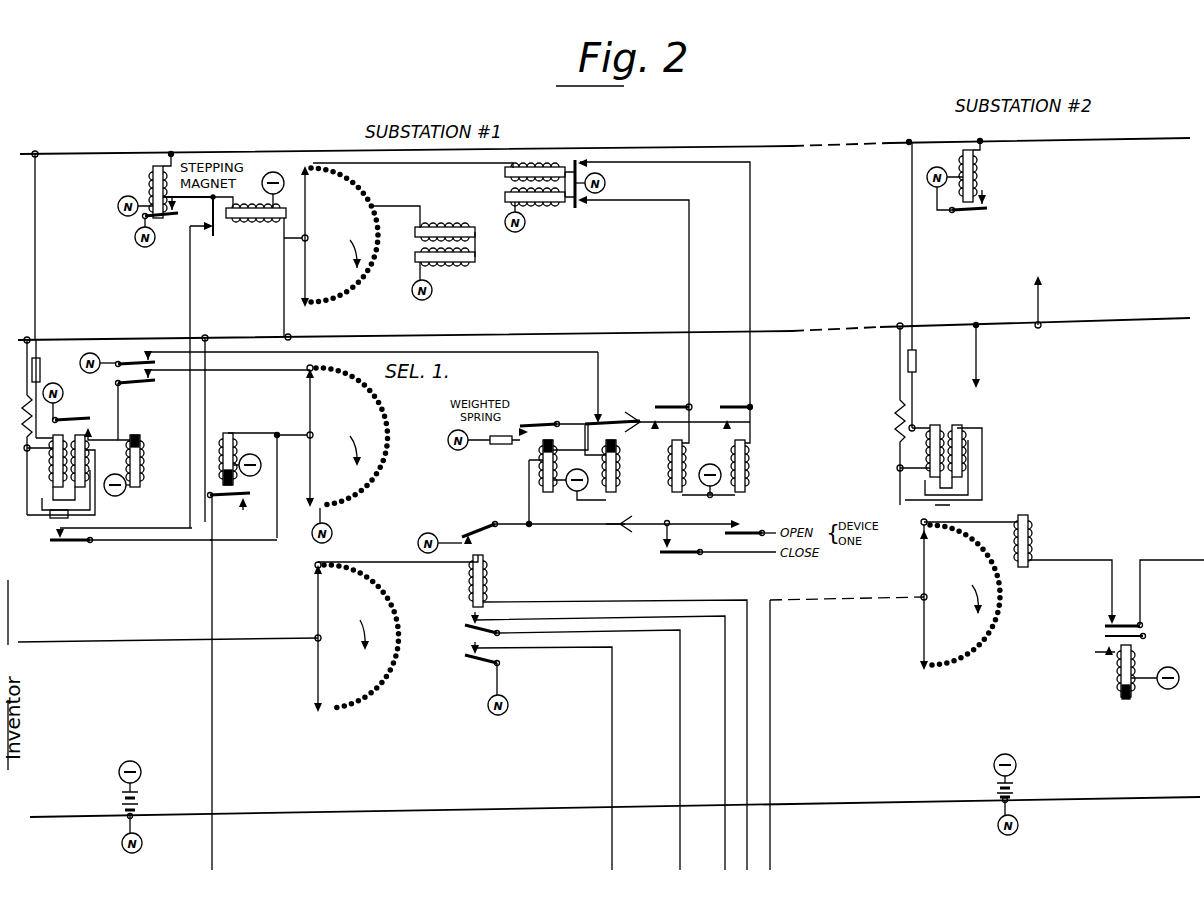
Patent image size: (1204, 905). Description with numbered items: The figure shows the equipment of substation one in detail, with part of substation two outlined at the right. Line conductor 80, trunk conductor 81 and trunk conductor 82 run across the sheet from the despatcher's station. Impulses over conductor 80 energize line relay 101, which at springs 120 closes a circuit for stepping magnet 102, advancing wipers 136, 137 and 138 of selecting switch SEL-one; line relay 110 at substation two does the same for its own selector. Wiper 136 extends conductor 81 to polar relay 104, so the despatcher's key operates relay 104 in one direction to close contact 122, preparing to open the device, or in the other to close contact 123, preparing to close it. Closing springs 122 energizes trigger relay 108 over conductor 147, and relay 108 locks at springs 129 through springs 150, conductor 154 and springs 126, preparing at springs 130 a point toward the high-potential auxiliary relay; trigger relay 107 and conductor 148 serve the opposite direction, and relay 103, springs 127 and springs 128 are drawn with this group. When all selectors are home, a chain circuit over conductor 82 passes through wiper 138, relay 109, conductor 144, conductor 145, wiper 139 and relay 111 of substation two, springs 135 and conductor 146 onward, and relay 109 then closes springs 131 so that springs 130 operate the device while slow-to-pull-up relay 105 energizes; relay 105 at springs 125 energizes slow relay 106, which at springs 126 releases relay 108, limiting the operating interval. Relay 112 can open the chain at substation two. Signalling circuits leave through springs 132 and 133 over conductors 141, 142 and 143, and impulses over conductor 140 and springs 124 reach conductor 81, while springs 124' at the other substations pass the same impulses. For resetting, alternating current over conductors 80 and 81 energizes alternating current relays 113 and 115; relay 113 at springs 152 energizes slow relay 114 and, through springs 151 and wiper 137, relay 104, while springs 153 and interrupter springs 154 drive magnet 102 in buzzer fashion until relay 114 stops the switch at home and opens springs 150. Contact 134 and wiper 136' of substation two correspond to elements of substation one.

The line conductor 80 is at (27, 155).
The trunk conductor 81 is at (72, 338).
The trunk conductor 82 is at (82, 640).
The line relay 101 is at (149, 167).
The stepping magnet 102 is at (276, 220).
The relay 103 is at (476, 248).
The polar relay 104 is at (505, 176).
The slow-to-pull-up relay 105 is at (543, 454).
The slow-to-pull-up relay 106 is at (619, 448).
The trigger relay 107 is at (670, 476).
The trigger relay 108 is at (746, 480).
The chain relay 109 is at (484, 556).
The line relay 110 is at (973, 170).
The chain relay 111 is at (1027, 518).
The relay 112 is at (1120, 682).
The alternating current relay 113 is at (84, 496).
The slow-to-pull-up relay 114 is at (140, 441).
The alternating current relay 115 is at (954, 422).
The springs 120 is at (172, 225).
The springs 122 is at (588, 168).
The contact 123 is at (590, 204).
The springs 124 is at (243, 517).
The springs 124' is at (997, 356).
The springs 125 is at (545, 418).
The springs 126 is at (630, 422).
The contact 127 is at (668, 404).
The contact 128 is at (678, 556).
The springs 129 is at (728, 404).
The springs 130 is at (762, 524).
The springs 131 is at (472, 525).
The springs 132 is at (470, 632).
The springs 133 is at (470, 662).
The contact 134 is at (978, 214).
The springs 135 is at (1138, 624).
The wiper 136 is at (407, 235).
The selector switch 136' is at (1061, 300).
The wiper 137 is at (310, 468).
The wiper 138 is at (318, 676).
The wiper 139 is at (928, 634).
The conductor 140 is at (214, 866).
The conductor 141 is at (612, 855).
The conductor 142 is at (680, 852).
The conductor 143 is at (725, 852).
The conductor 144 is at (750, 822).
The conductor 145 is at (770, 852).
The conductor 146 is at (1174, 556).
The conductor 147 is at (750, 240).
The conductor 148 is at (689, 245).
The springs 150 is at (134, 363).
The springs 151 is at (140, 382).
The springs 152 is at (76, 418).
The springs 153 is at (72, 542).
The interrupter springs 154 is at (204, 234).